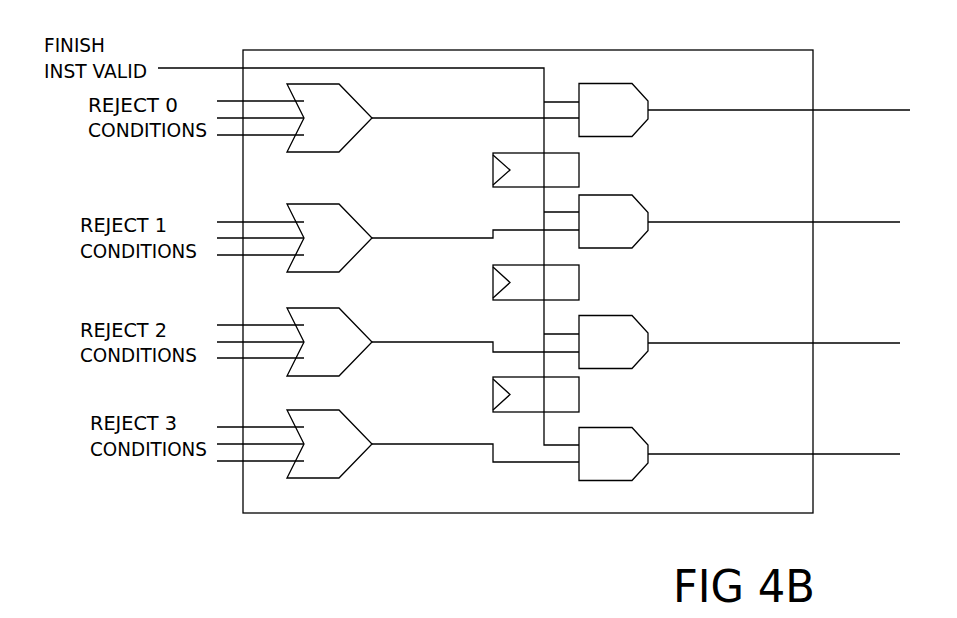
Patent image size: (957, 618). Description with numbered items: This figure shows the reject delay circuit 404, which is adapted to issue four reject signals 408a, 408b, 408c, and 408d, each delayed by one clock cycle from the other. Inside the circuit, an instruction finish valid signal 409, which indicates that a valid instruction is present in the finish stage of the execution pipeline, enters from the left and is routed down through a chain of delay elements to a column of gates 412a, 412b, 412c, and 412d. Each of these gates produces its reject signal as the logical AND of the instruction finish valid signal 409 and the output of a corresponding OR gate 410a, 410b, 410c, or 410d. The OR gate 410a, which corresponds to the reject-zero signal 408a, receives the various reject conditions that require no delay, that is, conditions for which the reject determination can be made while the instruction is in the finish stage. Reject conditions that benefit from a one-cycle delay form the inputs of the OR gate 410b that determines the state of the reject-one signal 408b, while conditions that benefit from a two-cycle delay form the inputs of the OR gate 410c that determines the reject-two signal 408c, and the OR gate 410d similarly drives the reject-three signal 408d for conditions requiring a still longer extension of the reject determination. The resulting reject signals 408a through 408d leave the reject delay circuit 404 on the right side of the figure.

The reject delay circuit 404 is at (668, 507).
The instruction finish valid signal 409 is at (182, 68).
The OR gate 410a is at (350, 128).
The OR gate 410b is at (350, 248).
The OR gate 410c is at (350, 352).
The OR gate 410d is at (350, 449).
The AND gate 412a is at (633, 120).
The AND gate 412b is at (633, 232).
The AND gate 412c is at (633, 355).
The AND gate 412d is at (633, 466).
The reject 0 signal 408a is at (822, 112).
The reject 1 signal 408b is at (822, 224).
The reject 2 signal 408c is at (822, 345).
The reject 3 signal 408d is at (822, 456).